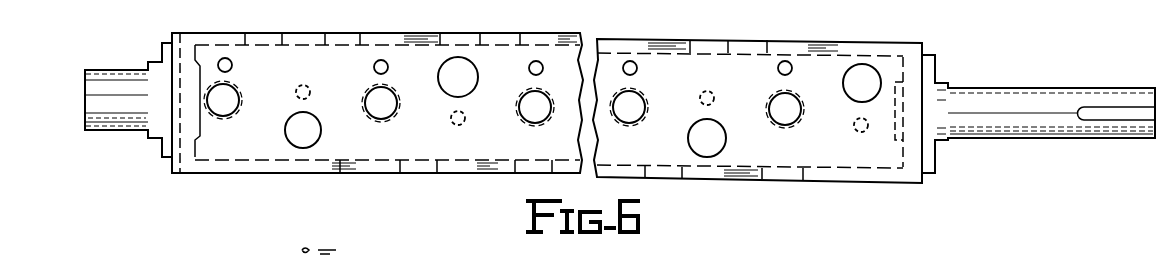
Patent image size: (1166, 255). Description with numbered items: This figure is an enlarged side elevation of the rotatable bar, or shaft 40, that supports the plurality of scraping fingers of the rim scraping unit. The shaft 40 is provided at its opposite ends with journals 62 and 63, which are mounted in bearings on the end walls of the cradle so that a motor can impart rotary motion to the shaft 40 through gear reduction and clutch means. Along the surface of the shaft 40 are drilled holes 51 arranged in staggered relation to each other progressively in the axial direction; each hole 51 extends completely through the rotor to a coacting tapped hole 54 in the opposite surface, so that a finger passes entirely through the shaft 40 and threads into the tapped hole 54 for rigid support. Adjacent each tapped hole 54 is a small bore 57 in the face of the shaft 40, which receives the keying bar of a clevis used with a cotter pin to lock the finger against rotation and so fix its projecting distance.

The shaft 40 is at (422, 173).
The hole 51 is at (472, 90).
The tapped hole 54 is at (393, 117).
The small bore 57 is at (384, 60).
The journal 62 is at (117, 132).
The journal 63 is at (1003, 138).